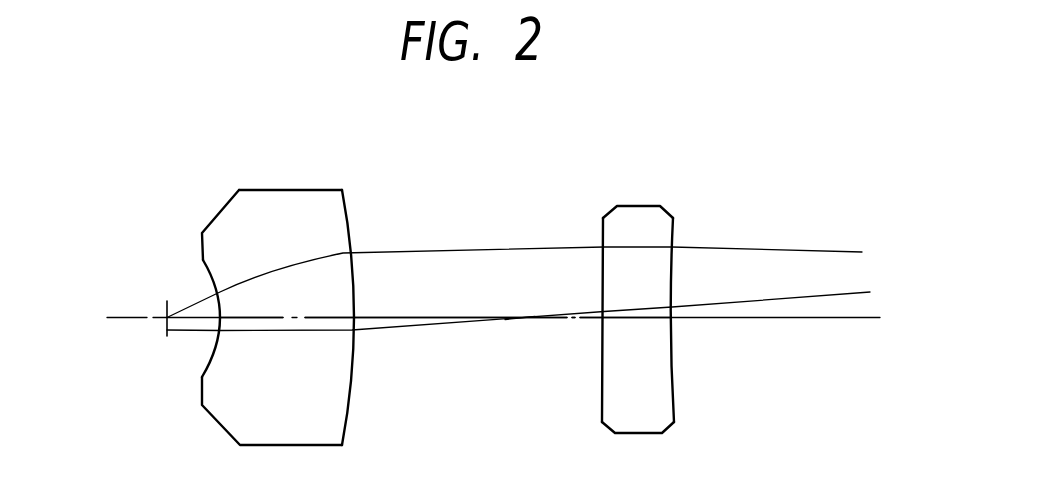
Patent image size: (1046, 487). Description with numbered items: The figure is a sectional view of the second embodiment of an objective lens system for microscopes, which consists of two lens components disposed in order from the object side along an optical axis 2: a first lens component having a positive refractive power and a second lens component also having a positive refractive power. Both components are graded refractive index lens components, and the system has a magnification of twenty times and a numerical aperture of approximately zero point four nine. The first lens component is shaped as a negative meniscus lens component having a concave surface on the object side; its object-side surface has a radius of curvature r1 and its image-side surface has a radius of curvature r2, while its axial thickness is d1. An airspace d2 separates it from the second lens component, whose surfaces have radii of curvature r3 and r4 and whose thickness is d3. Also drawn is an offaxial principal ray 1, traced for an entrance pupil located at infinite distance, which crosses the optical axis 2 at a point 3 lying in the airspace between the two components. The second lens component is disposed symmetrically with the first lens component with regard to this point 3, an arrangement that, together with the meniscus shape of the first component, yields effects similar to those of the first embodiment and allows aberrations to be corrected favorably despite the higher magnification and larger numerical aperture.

The offaxial principal ray 1 is at (188, 330).
The optical axis 2 is at (142, 315).
The point of intersection 3 is at (498, 318).
The radius of curvature of the first surface r1 is at (205, 264).
The radius of curvature of the second surface r2 is at (352, 232).
The radius of curvature of the third surface r3 is at (603, 227).
The radius of curvature of the fourth surface r4 is at (675, 231).
The thickness of the first lens component d1 is at (264, 320).
The airspace d2 is at (422, 319).
The thickness of the second lens component d3 is at (636, 320).